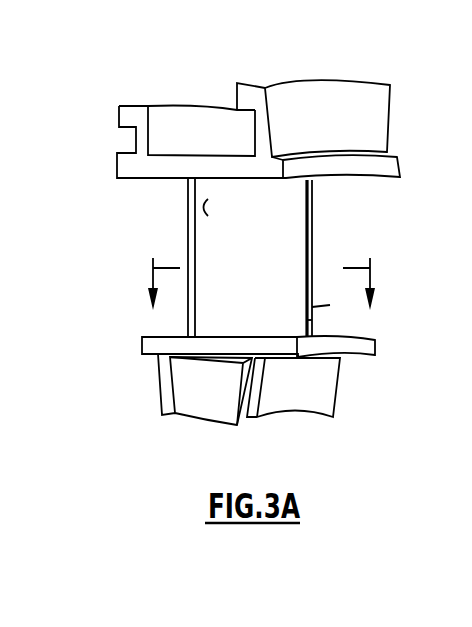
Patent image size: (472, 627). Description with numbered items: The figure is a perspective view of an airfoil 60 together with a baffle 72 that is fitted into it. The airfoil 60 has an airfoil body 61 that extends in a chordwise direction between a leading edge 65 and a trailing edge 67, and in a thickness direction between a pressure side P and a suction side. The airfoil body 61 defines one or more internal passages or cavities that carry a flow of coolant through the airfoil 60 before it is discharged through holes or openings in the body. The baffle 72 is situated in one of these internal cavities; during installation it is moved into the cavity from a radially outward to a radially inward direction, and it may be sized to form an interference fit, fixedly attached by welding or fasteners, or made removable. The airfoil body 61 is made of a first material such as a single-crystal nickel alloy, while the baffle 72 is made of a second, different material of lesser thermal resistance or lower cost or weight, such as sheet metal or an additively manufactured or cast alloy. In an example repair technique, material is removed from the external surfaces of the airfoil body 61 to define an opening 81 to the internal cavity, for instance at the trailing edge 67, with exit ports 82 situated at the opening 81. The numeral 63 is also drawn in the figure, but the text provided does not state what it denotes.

The airfoil 60 is at (82, 80).
The flange 63 is at (118, 167).
The airfoil body 61 is at (188, 187).
The leading edge 65 is at (192, 223).
The pressure side P is at (188, 208).
The trailing edge 67 is at (312, 227).
The baffle 72 is at (326, 202).
The exit ports 82 is at (312, 307).
The opening 81 is at (335, 324).